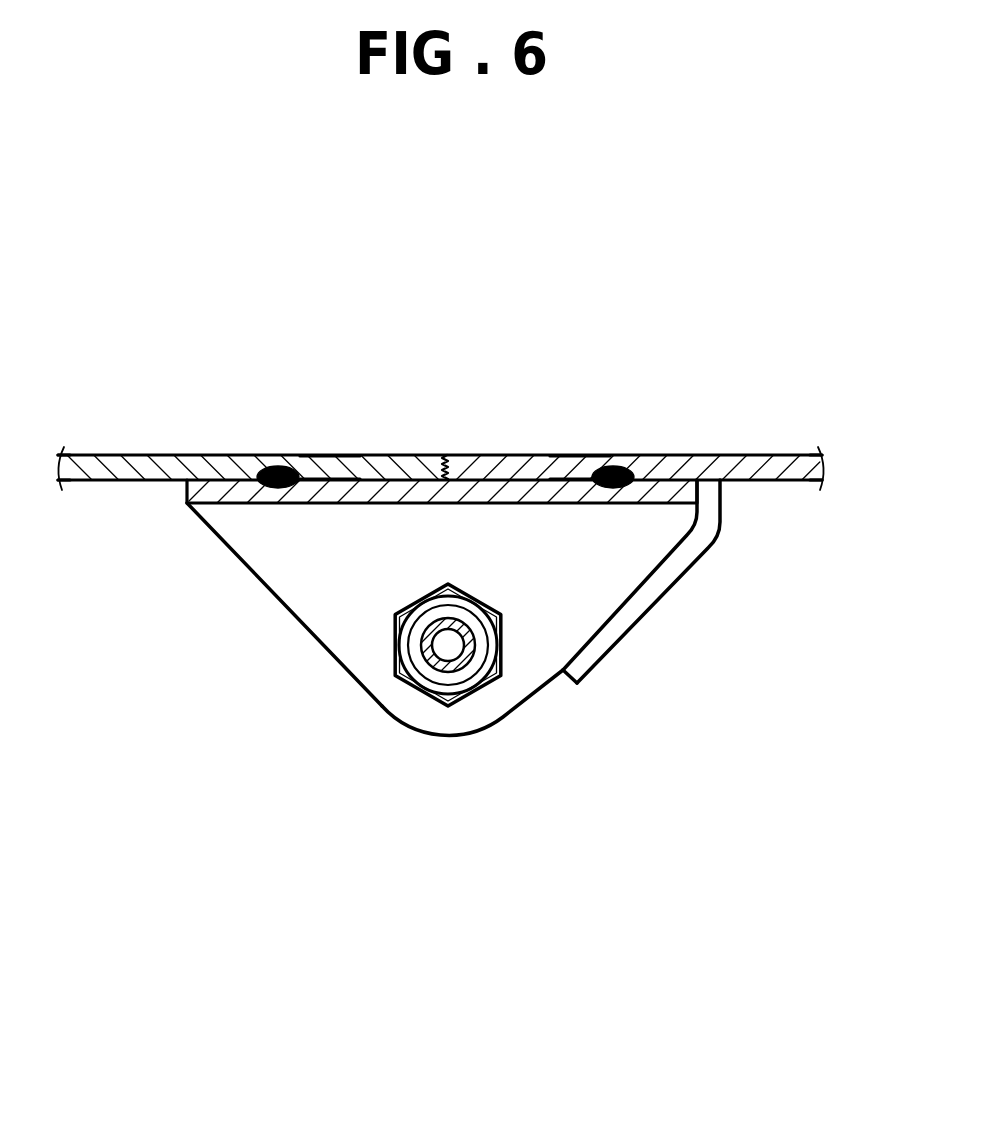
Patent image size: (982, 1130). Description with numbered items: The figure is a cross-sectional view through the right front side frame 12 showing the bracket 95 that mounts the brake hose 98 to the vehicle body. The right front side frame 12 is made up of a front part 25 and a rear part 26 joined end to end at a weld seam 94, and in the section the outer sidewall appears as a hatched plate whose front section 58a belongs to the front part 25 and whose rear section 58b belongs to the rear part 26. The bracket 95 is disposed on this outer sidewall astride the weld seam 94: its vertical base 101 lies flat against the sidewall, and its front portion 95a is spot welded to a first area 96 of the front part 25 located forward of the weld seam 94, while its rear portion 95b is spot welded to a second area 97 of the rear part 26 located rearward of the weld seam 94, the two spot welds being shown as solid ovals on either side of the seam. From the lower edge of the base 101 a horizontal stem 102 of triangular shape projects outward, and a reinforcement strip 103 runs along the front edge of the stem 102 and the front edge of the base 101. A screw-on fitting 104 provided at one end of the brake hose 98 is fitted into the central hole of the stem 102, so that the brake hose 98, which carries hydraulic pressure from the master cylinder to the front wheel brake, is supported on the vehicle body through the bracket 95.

The right front side frame 12 is at (797, 222).
The rear part 26 is at (210, 455).
The front part 25 is at (728, 455).
The rear section of the outer sidewall 58b is at (137, 463).
The front section of the outer sidewall 58a is at (775, 462).
The second area of the outer sidewall 97 is at (330, 470).
The first area of the outer sidewall 96 is at (576, 470).
The weld seam 94 is at (447, 468).
The bracket 95 is at (390, 715).
The rear portion of the bracket 95b is at (252, 497).
The front portion of the bracket 95a is at (597, 500).
The base 101 is at (412, 492).
The stem 102 is at (347, 637).
The reinforcement strip 103 is at (636, 608).
The screw-on fitting 104 is at (503, 672).
The brake hose 98 is at (473, 665).